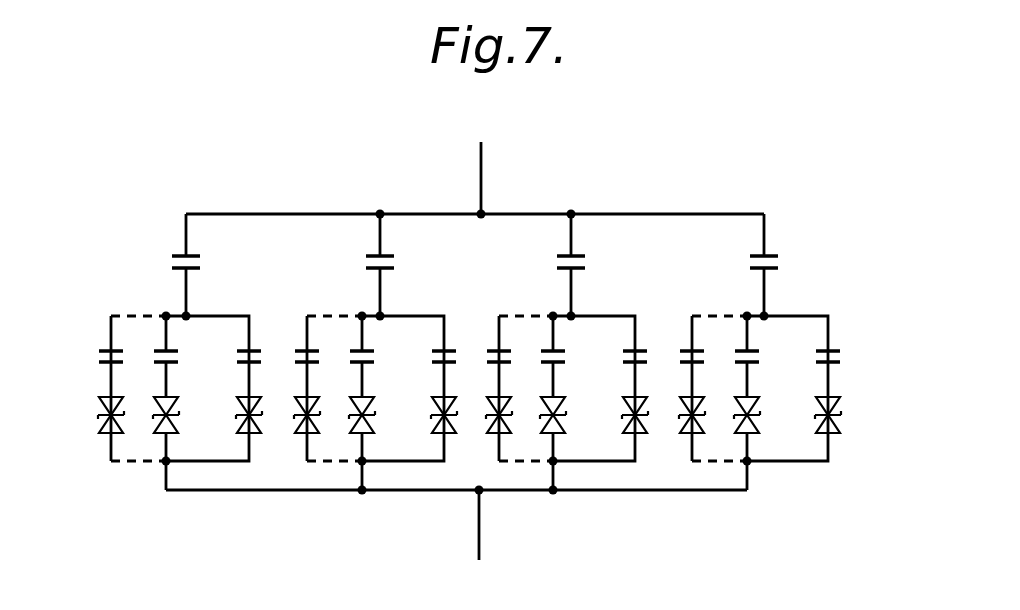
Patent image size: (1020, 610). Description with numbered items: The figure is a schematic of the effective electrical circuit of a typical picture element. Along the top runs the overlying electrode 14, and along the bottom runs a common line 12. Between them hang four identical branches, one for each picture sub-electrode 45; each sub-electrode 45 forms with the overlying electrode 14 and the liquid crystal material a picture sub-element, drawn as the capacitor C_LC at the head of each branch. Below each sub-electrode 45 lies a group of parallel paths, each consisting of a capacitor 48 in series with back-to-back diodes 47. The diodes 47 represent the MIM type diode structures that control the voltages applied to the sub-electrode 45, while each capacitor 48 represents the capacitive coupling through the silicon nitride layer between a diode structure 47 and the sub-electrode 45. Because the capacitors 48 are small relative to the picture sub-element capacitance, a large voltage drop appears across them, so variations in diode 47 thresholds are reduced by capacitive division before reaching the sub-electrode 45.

The electrode 14 is at (484, 152).
The second terminal / supply line 12 is at (482, 536).
The sub-electrode 45 is at (800, 245).
The capacitor 48 is at (833, 352).
The back-to-back diodes 47 is at (838, 430).